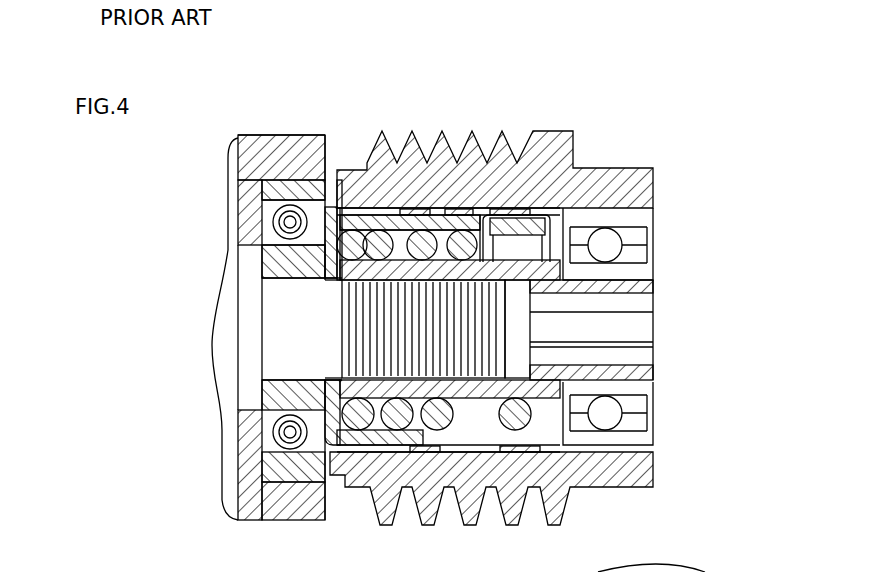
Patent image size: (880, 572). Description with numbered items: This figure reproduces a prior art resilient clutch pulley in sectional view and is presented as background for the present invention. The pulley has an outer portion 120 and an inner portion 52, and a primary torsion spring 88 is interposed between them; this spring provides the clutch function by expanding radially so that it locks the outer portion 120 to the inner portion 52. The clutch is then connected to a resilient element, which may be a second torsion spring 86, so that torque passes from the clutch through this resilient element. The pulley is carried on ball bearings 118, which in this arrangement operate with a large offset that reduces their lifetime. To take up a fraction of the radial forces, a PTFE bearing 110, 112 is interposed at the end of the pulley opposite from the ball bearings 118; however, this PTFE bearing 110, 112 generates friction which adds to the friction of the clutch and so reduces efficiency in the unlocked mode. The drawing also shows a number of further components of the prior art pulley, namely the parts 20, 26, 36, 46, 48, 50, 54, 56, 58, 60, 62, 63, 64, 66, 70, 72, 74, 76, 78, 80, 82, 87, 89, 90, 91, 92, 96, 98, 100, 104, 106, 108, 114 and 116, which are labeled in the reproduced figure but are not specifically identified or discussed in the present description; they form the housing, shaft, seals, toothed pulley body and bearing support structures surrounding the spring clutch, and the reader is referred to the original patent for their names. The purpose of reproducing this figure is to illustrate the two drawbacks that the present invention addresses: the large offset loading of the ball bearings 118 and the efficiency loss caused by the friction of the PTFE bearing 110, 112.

The ring gear 20 is at (425, 165).
The pulley body 26 is at (613, 497).
The spring chamber 36 is at (340, 358).
The cover plate 46 is at (272, 152).
The shaft 48 is at (200, 340).
The hub housing 50 is at (232, 174).
The inner portion 52 is at (672, 287).
The spline 54 is at (430, 305).
The sleeve end 56 is at (500, 352).
The spline teeth 58 is at (425, 320).
The shaft journal 60 is at (668, 290).
The shaft shoulder 62 is at (647, 352).
The lower seal 63 is at (305, 424).
The upper seal 64 is at (272, 217).
The washer 66 is at (262, 258).
The cavity 70 is at (253, 341).
The seal boot 72 is at (487, 220).
The roller cage 74 is at (400, 230).
The thrust plate 76 is at (475, 215).
The hub flange 78 is at (583, 165).
The inner sleeve 80 is at (347, 286).
The seal lip 82 is at (525, 225).
The second torsion spring 86 is at (375, 285).
The retainer 87 is at (356, 450).
The primary torsion spring 88 is at (450, 230).
The bearing race 89 is at (633, 257).
The gear tooth 90 is at (485, 470).
The spacer 91 is at (262, 243).
The tooth flank 92 is at (440, 460).
The bearing 96 is at (647, 190).
The tooth root 98 is at (405, 487).
The plate 100 is at (550, 205).
The roller bearing 104 is at (440, 300).
The sleeve wall 106 is at (372, 212).
The plate segment 108 is at (463, 205).
The PTFE bearing 110 is at (365, 213).
The PTFE bearing 112 is at (345, 185).
The housing wall 114 is at (335, 210).
The outer race 116 is at (637, 170).
The ball bearings 118 is at (653, 220).
The outer portion 120 is at (622, 170).